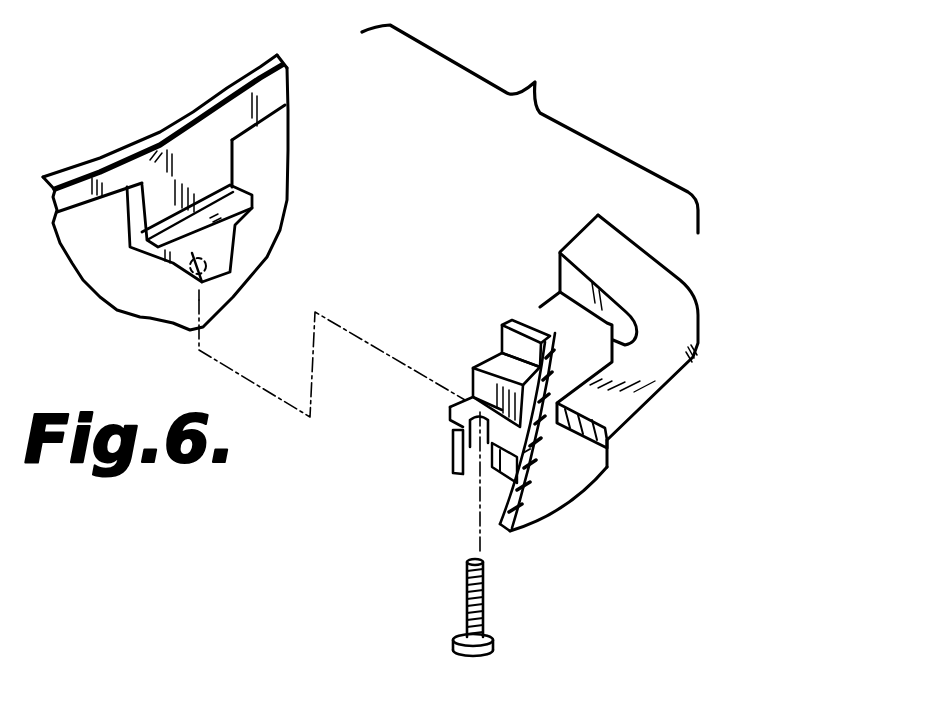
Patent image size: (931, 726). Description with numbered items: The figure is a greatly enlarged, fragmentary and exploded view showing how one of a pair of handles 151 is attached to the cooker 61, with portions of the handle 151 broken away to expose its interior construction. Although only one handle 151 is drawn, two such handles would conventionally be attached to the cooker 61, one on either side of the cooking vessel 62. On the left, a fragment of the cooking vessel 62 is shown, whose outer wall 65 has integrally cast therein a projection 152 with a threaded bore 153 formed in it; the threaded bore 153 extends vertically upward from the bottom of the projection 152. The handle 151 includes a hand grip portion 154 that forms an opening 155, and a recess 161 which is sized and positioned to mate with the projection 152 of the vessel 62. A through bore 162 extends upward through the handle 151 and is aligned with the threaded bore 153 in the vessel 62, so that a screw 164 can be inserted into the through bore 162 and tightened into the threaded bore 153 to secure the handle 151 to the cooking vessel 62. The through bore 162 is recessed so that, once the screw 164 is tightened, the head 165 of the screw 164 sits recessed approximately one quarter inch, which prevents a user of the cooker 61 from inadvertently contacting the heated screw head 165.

The cooker 61 is at (105, 126).
The cooking vessel 62 is at (238, 90).
The cooking vessel outer wall 65 is at (103, 246).
The handle 151 is at (752, 252).
The projection 152 is at (250, 203).
The threaded bore 153 is at (220, 281).
The hand grip portion 154 is at (692, 365).
The opening 155 is at (615, 342).
The recess 161 is at (512, 345).
The through bore 162 is at (480, 448).
The screw 164 is at (515, 594).
The screw head 165 is at (480, 658).